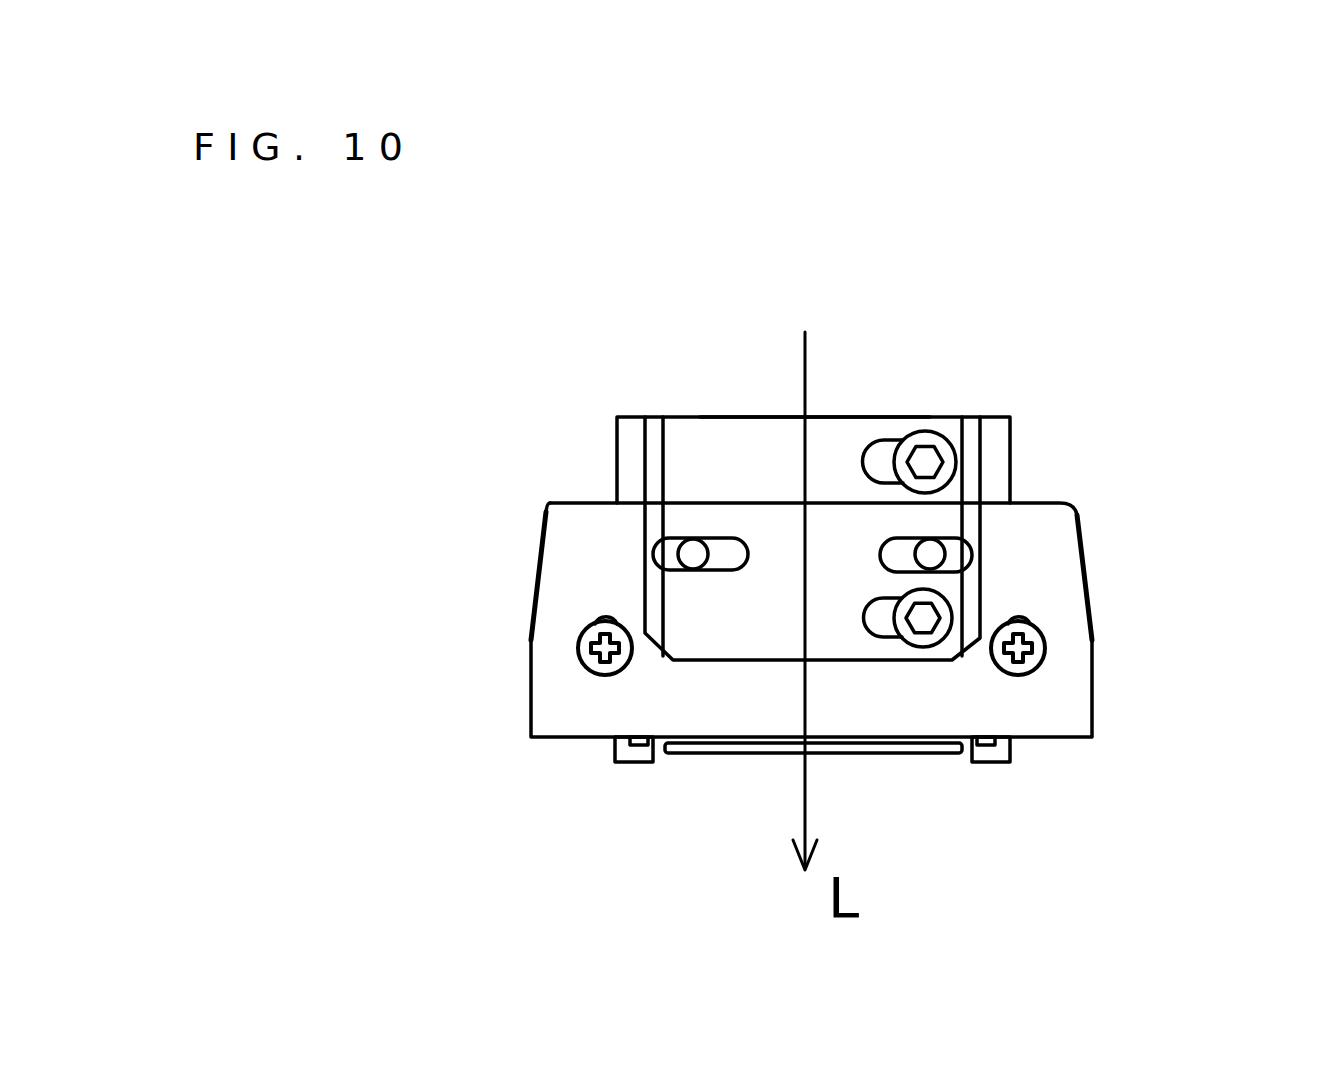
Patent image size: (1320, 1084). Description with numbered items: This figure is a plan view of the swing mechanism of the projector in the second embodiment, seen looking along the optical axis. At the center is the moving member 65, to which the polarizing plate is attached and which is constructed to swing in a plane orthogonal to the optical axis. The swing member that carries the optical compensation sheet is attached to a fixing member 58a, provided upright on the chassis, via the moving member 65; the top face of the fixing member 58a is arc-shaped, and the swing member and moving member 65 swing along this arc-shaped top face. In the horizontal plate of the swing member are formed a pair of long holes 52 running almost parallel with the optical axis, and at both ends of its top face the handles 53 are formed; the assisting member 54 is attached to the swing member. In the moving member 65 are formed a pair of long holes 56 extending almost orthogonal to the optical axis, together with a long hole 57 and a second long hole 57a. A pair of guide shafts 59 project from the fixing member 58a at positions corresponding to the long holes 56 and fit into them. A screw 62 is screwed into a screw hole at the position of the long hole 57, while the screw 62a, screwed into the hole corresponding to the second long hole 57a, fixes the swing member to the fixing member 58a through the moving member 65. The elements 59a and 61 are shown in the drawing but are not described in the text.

The long hole 52 is at (603, 612).
The handle 53 is at (537, 560).
The assisting member 54 is at (738, 640).
The long hole 56 is at (730, 540).
The long hole 57 is at (878, 640).
The second long hole 57a is at (884, 443).
The fixing member 58a is at (688, 435).
The guide shaft 59 is at (693, 547).
The base 59a is at (1057, 707).
The screw 61 is at (578, 668).
The screw 62 is at (923, 650).
The screw 62a is at (925, 433).
The moving member 65 is at (843, 442).